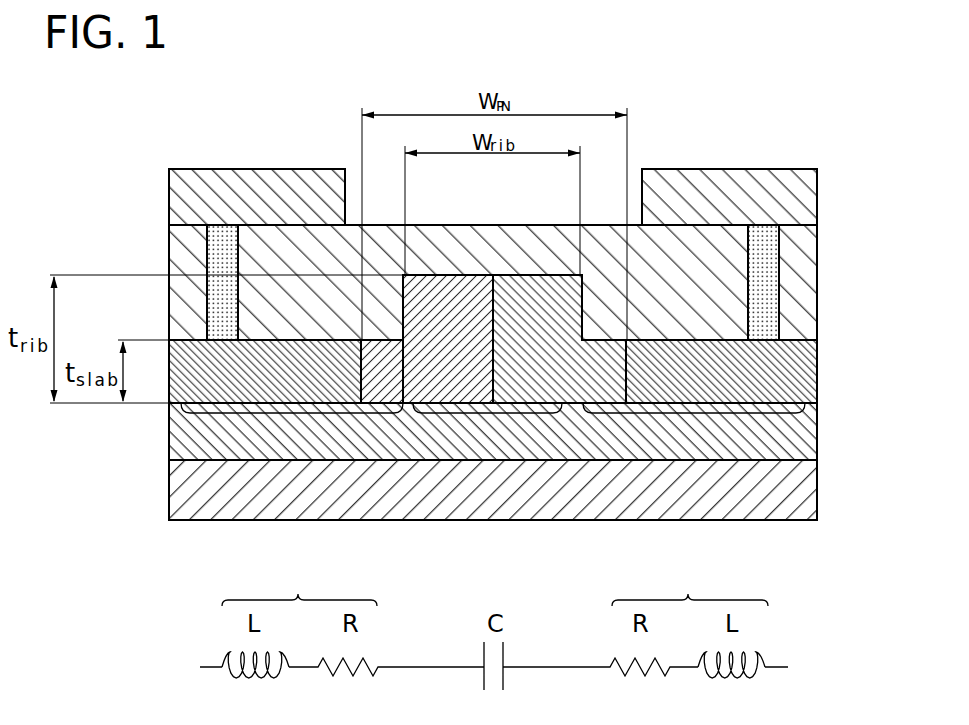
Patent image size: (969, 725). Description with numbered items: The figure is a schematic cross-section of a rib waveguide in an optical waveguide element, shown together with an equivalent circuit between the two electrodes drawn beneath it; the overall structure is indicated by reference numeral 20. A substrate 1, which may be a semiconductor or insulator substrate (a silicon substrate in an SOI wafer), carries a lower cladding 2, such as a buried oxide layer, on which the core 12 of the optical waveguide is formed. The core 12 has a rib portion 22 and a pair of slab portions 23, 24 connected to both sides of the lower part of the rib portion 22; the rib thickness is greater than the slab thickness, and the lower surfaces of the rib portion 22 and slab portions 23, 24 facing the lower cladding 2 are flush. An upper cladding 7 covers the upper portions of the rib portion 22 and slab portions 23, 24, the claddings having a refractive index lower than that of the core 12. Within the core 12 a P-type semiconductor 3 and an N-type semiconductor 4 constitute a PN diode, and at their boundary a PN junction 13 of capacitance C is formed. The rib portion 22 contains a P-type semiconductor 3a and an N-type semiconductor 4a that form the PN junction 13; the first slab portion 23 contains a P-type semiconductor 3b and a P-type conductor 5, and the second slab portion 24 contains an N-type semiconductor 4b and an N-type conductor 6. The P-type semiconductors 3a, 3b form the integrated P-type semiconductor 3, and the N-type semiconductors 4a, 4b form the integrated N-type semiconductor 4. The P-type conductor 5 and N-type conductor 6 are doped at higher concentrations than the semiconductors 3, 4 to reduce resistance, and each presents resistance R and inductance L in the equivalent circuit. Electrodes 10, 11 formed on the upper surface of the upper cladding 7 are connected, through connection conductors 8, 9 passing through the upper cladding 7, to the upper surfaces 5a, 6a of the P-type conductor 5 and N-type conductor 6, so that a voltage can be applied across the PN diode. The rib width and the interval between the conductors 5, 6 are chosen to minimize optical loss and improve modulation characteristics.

The substrate 1 is at (808, 494).
The lower cladding 2 is at (808, 436).
The P-type semiconductor 3 is at (482, 196).
The P-type semiconductor 3a is at (457, 297).
The P-type semiconductor 3b is at (383, 355).
The N-type semiconductor 4 is at (570, 196).
The N-type semiconductor 4a is at (527, 297).
The N-type semiconductor 4b is at (603, 357).
The P-type conductor 5 is at (182, 380).
The upper surface 5a is at (186, 331).
The N-type conductor 6 is at (800, 380).
The upper surface 6a is at (800, 330).
The upper cladding 7 is at (712, 250).
The connection conductor 8 is at (200, 262).
The connection conductor 9 is at (765, 268).
The electrode 10 is at (178, 195).
The electrode 11 is at (808, 195).
The core 12 is at (833, 359).
The PN junction 13 is at (488, 355).
The optical modulator 20 is at (177, 113).
The rib portion 22 is at (490, 415).
The first slab portion 23 is at (288, 415).
The second slab portion 24 is at (697, 415).